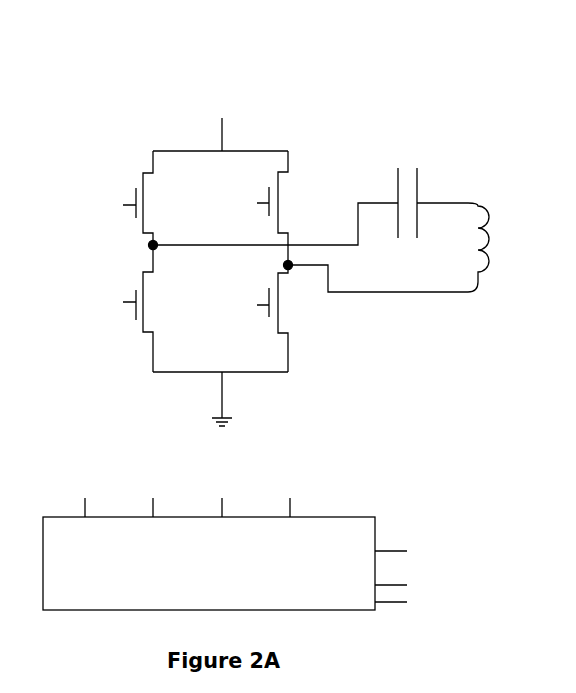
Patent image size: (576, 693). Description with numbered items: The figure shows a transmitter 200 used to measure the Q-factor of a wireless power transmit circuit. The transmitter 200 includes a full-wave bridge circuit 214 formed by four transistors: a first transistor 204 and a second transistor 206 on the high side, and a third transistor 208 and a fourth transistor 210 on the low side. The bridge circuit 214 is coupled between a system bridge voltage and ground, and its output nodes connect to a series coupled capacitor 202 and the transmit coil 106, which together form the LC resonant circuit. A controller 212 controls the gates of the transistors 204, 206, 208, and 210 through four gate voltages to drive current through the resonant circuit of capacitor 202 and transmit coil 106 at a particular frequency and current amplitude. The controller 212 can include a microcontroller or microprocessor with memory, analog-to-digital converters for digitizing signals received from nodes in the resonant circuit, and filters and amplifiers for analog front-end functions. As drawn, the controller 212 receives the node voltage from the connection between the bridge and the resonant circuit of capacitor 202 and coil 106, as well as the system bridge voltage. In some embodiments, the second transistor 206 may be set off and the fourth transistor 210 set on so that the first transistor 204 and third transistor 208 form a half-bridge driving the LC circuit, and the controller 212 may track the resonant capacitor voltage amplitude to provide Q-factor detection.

The transmitter 200 is at (158, 63).
The capacitor 202 is at (398, 168).
The transistor 204 is at (136, 190).
The transistor 206 is at (288, 170).
The transistor 208 is at (135, 315).
The transistor 210 is at (290, 335).
The controller 212 is at (320, 578).
The full-wave bridge circuit 214 is at (220, 342).
The transmit coil 106 is at (488, 228).